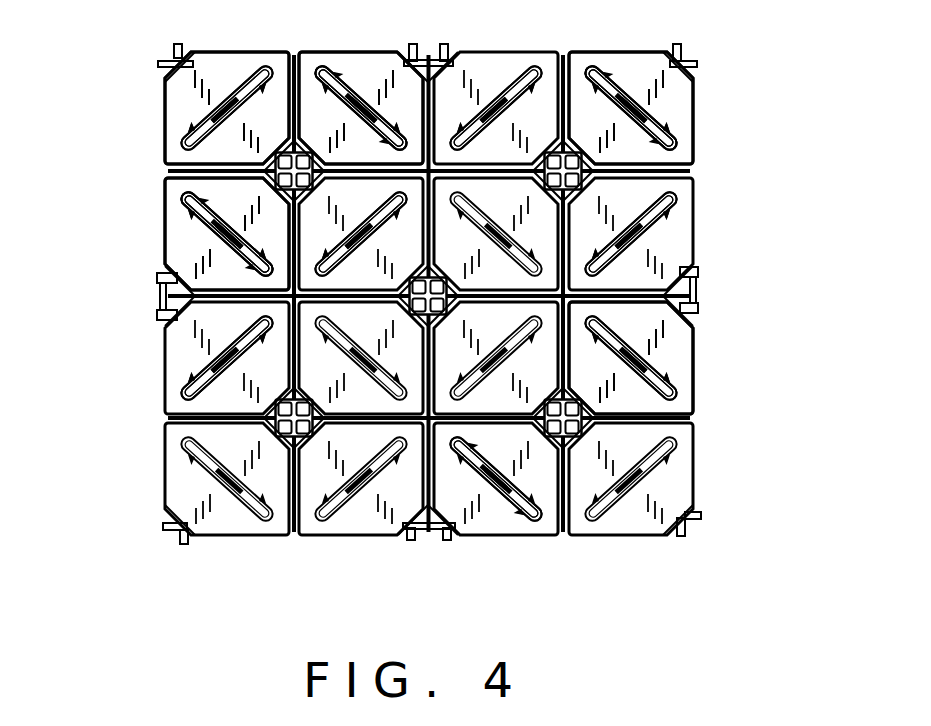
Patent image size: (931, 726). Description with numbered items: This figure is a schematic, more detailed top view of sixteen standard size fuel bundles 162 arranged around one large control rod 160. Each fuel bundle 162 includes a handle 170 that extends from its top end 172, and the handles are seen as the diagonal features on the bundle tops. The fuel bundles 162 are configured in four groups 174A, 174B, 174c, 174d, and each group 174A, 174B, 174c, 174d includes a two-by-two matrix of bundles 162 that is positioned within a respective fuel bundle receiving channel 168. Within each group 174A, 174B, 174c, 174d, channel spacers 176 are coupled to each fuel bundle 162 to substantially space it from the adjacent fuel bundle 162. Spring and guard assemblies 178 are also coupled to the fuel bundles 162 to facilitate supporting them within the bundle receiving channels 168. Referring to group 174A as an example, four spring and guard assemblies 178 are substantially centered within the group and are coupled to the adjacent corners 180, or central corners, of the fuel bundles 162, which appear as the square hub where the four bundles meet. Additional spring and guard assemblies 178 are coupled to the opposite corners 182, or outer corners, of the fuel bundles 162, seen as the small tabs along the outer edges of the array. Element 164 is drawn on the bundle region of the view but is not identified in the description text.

The large control rod 160 is at (640, 300).
The fuel bundle 162 is at (352, 70).
The slot insert element 164 is at (372, 228).
The fuel bundle receiving channel 168 is at (653, 133).
The handle 170 is at (358, 95).
The top end 172 is at (666, 90).
The group of fuel bundles 174A is at (157, 455).
The group of fuel bundles 174B is at (153, 148).
The group of fuel bundles 174c is at (757, 182).
The group of fuel bundles 174d is at (710, 394).
The channel spacer 176 is at (165, 432).
The spring and guard assembly 178 is at (200, 326).
The adjacent corner 180 is at (260, 402).
The opposite corner 182 is at (157, 309).